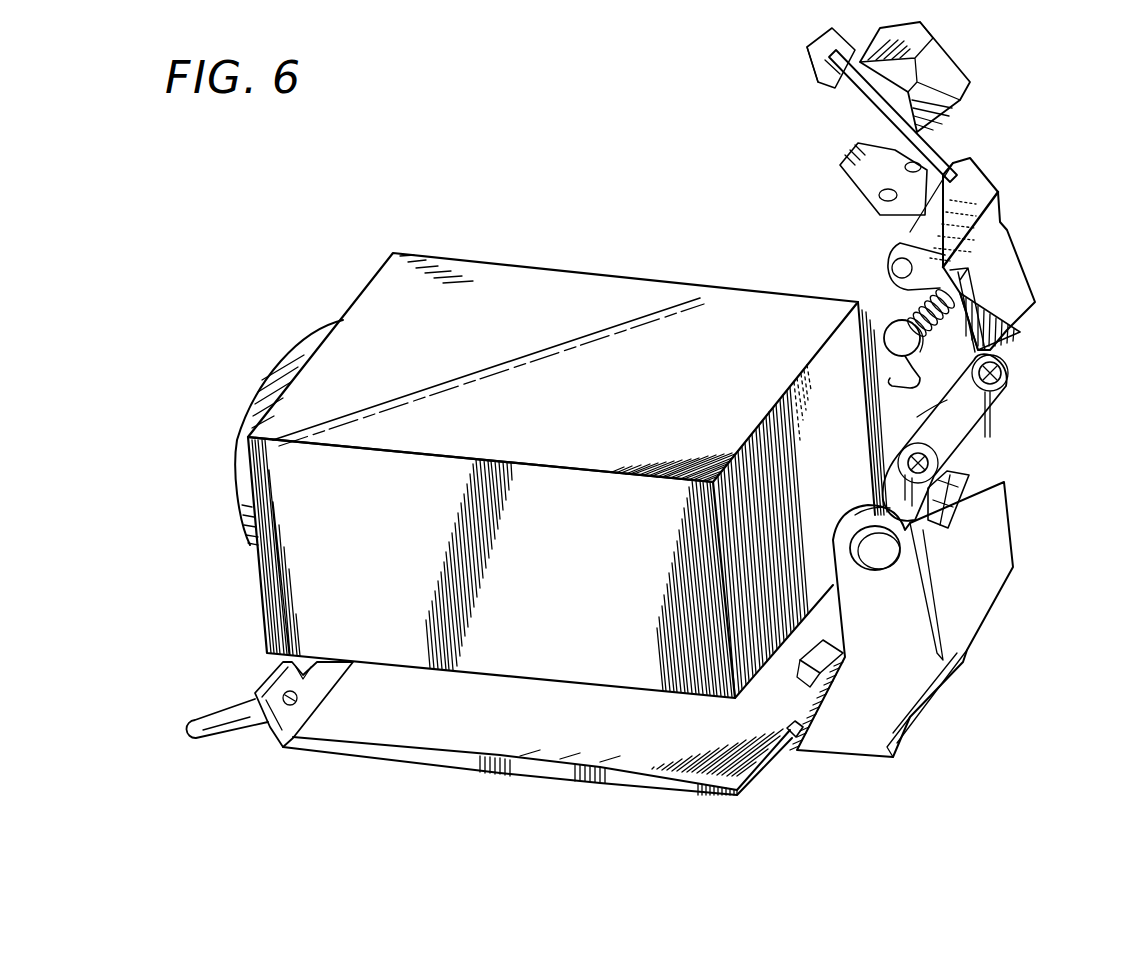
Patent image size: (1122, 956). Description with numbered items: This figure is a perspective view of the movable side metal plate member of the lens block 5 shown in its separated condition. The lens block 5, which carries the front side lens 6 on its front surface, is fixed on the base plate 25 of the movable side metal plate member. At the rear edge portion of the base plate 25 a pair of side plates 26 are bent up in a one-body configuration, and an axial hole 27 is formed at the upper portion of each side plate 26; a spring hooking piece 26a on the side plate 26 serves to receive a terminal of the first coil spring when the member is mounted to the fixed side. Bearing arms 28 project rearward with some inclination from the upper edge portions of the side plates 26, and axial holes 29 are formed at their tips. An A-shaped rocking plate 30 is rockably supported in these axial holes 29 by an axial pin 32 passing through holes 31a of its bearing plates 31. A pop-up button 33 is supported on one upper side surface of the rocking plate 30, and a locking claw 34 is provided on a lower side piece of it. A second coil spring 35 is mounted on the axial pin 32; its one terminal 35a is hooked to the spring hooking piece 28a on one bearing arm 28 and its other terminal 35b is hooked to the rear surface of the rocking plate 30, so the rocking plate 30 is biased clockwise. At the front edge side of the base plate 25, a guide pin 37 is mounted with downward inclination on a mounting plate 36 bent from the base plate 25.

The lens block 5 is at (585, 302).
The front side lens 6 is at (262, 383).
The base plate 25 is at (397, 735).
The side plate 26 is at (990, 480).
The spring hooking piece 26a is at (787, 727).
The axial hole 27 is at (890, 562).
The bearing arm 28 is at (1000, 410).
The spring hooking piece 28a is at (960, 498).
The axial hole 29 is at (1013, 380).
The rocking plate 30 is at (980, 260).
The bearing plate 31 is at (953, 172).
The hole 31a is at (910, 232).
The axial pin 32 is at (885, 343).
The pop-up button 33 is at (920, 52).
The locking claw 34 is at (1013, 323).
The second coil spring 35 is at (905, 290).
The terminal 35a is at (913, 373).
The terminal 35b is at (980, 252).
The mounting plate 36 is at (293, 720).
The guide pin 37 is at (220, 722).